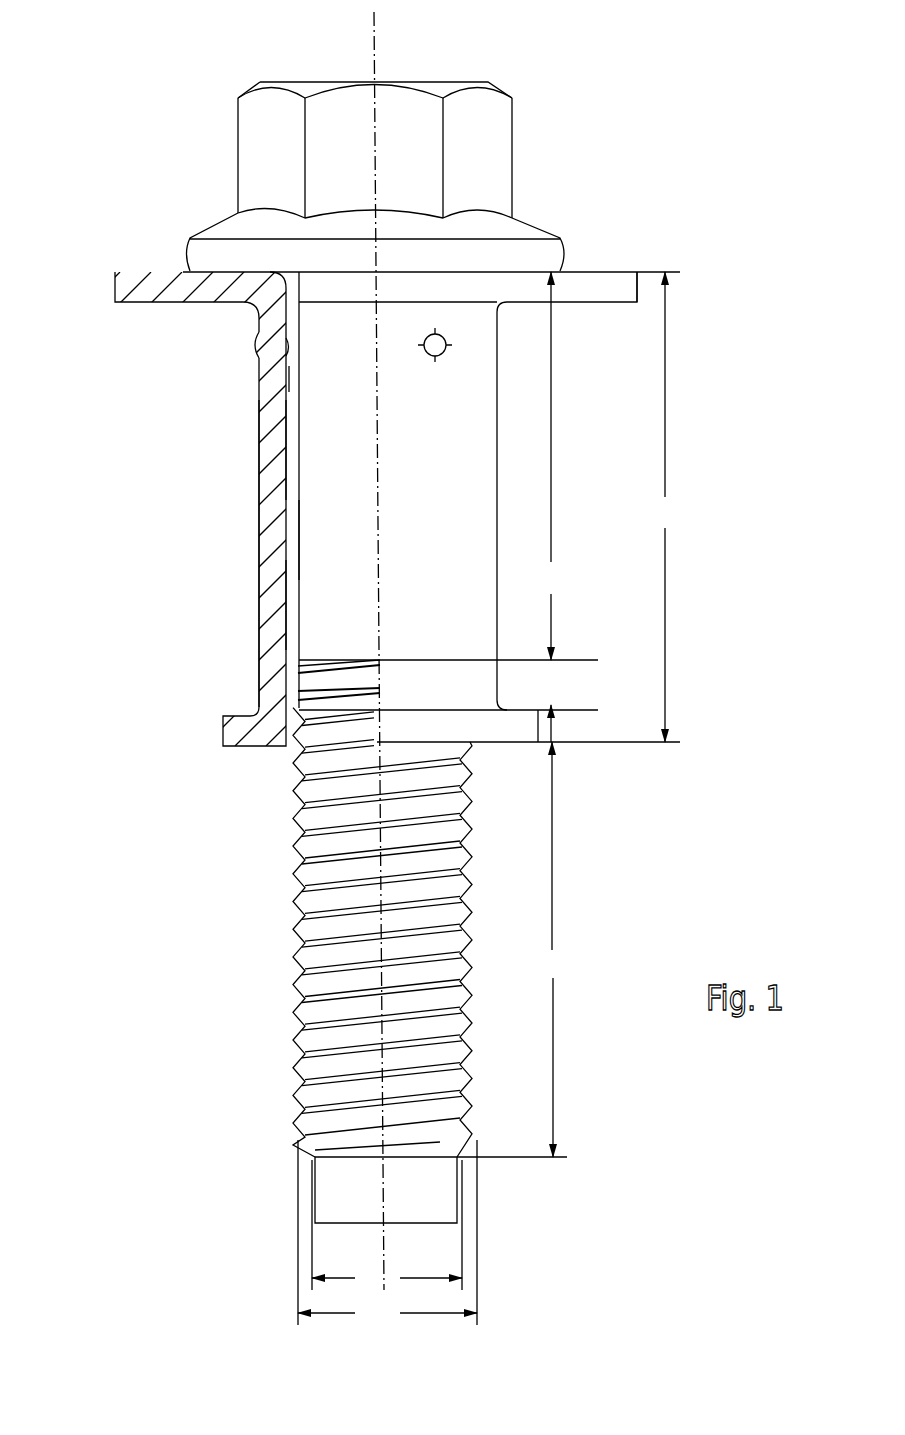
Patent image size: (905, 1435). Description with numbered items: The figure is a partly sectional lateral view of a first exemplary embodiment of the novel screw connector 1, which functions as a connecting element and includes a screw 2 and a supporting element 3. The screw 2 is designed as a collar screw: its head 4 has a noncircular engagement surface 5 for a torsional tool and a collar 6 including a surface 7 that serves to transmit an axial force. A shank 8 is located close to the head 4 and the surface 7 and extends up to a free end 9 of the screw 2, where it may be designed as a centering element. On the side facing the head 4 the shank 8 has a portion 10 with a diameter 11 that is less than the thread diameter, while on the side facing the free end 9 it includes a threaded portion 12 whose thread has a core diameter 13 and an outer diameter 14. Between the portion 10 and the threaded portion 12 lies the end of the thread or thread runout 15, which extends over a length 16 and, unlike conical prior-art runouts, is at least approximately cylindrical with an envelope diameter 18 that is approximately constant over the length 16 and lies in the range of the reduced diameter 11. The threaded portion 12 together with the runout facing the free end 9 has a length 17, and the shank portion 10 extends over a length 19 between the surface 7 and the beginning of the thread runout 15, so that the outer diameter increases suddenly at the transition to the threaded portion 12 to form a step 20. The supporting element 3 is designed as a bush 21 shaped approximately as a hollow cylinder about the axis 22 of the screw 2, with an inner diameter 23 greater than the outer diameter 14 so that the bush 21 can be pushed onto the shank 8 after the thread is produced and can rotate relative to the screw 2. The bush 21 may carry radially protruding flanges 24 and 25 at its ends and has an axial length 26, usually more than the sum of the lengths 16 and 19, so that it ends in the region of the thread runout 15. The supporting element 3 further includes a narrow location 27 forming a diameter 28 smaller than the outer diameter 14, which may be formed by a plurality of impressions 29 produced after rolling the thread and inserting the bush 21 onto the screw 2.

The screw connector 1 is at (684, 368).
The screw 2 is at (517, 127).
The supporting element 3 is at (498, 415).
The head 4 is at (466, 122).
The noncircular engagement surface 5 is at (395, 115).
The collar 6 is at (520, 255).
The surface 7 is at (533, 270).
The shank 8 is at (298, 540).
The free end 9 is at (340, 1178).
The portion 10 is at (342, 428).
The diameter 11 is at (420, 509).
The threaded portion 12 is at (483, 898).
The core diameter 13 is at (387, 1226).
The outer diameter 14 is at (387, 1234).
The thread runout 15 is at (284, 670).
The length 16 is at (489, 701).
The length 17 is at (513, 949).
The envelope diameter 18 is at (300, 688).
The length 19 is at (551, 466).
The step 20 is at (300, 705).
The bush 21 is at (262, 597).
The axis 22 is at (374, 30).
The inner diameter 23 is at (420, 602).
The flange 24 is at (150, 292).
The flange 25 is at (240, 721).
The length 26 is at (667, 507).
The narrow location 27 is at (252, 355).
The diameter 28 is at (420, 378).
The impressions 29 is at (263, 345).